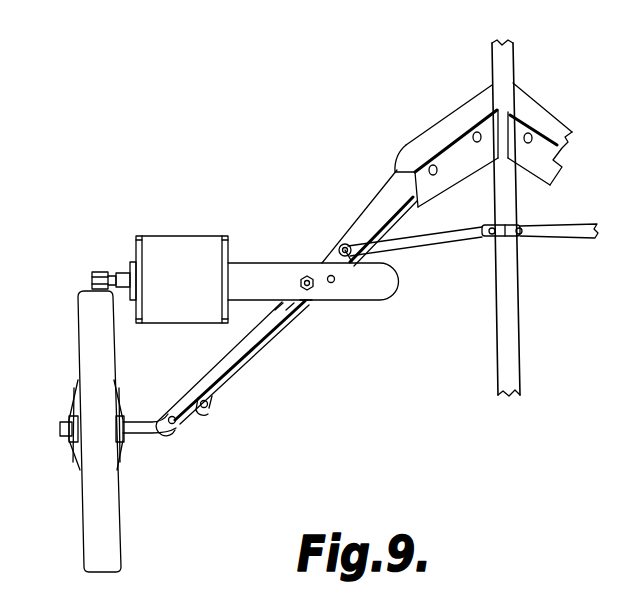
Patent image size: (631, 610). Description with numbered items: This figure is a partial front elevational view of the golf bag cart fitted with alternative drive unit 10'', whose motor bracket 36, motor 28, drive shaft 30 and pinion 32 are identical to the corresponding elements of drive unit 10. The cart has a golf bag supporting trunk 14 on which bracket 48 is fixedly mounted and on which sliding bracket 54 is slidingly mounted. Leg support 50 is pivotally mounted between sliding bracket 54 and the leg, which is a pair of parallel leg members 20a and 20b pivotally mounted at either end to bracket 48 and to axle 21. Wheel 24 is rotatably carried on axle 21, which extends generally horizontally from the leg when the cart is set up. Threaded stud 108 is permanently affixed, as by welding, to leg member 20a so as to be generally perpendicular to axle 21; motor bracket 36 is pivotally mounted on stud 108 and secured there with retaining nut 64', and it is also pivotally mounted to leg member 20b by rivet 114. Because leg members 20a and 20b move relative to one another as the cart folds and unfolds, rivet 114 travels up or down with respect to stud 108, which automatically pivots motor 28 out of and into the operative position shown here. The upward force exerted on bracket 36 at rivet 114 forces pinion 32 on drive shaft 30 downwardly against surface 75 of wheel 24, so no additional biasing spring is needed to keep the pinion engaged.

The trunk 14 is at (503, 62).
The bracket 48 is at (442, 123).
The sliding bracket 54 is at (516, 222).
The leg support 50 is at (435, 238).
The motor bracket 36 is at (262, 270).
The threaded stud 108 is at (309, 276).
The rivet 114 is at (334, 282).
The retaining nut 64' is at (314, 327).
The motor 28 is at (173, 296).
The drive shaft 30 is at (117, 272).
The pinion 32 is at (93, 272).
The alternative drive unit 10'' is at (207, 193).
The axle 21 is at (143, 432).
The leg member 20a is at (200, 405).
The leg member 20b is at (247, 367).
The wheel 24 is at (122, 523).
The surface 75 is at (103, 552).
The drive unit 10 is at (623, 285).